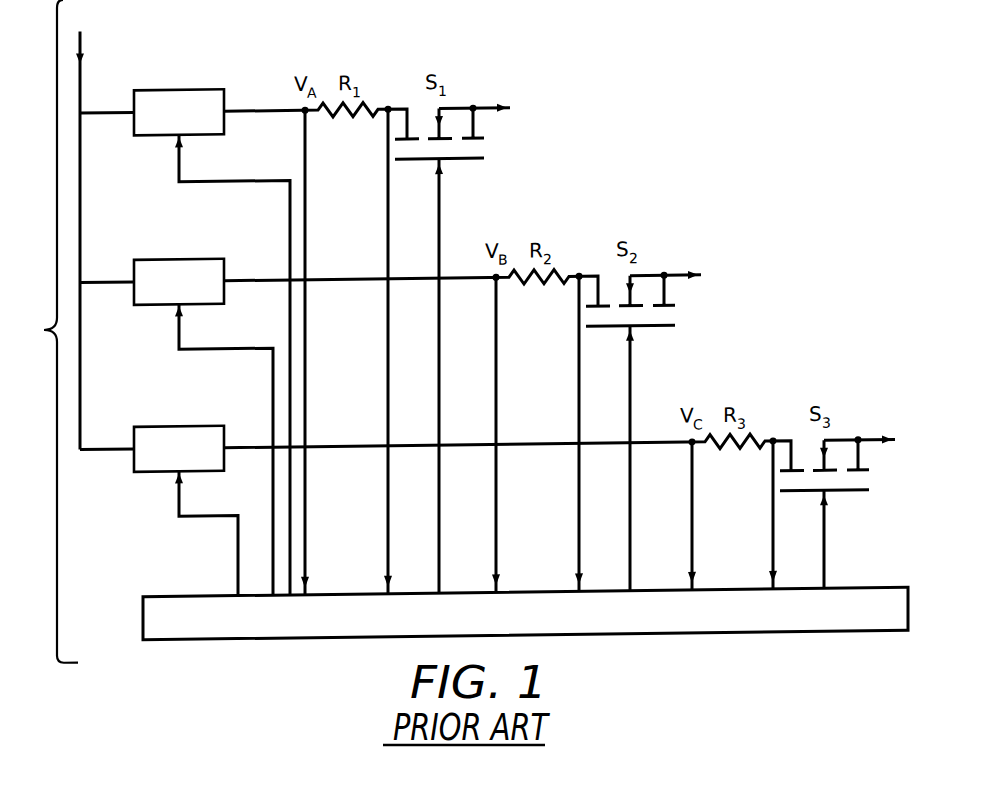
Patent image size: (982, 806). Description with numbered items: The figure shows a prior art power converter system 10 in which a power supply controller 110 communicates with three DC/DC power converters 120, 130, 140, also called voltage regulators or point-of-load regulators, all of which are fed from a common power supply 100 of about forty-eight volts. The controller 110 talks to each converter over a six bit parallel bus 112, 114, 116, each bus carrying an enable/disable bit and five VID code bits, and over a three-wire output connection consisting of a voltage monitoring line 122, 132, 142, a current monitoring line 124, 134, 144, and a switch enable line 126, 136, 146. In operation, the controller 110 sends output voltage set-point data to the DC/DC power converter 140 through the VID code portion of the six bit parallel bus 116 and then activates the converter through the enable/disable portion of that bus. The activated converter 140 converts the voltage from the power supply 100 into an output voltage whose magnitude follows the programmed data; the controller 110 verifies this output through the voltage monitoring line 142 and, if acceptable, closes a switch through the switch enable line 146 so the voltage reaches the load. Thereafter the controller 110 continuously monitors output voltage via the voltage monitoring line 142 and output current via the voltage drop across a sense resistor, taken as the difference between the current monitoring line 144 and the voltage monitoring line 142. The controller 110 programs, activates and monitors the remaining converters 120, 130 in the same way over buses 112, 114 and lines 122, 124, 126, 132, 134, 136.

The power converter system 10 is at (47, 331).
The power supply 100 is at (80, 221).
The power supply controller 110 is at (141, 605).
The six bit parallel bus 112 is at (238, 546).
The six bit parallel bus 114 is at (273, 462).
The six bit parallel bus 116 is at (290, 539).
The DC/DC power converter 120 is at (224, 433).
The voltage monitoring line 122 is at (692, 475).
The current monitoring line 124 is at (773, 523).
The switch enable line 126 is at (824, 527).
The DC/DC power converter 130 is at (224, 288).
The voltage monitoring line 132 is at (496, 342).
The current monitoring line 134 is at (579, 384).
The switch enable line 136 is at (630, 368).
The DC/DC power converter 140 is at (224, 116).
The voltage monitoring line 142 is at (305, 157).
The current monitoring line 144 is at (388, 193).
The switch enable line 146 is at (439, 192).